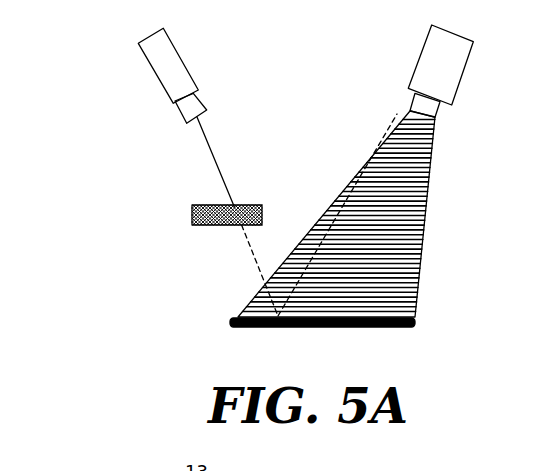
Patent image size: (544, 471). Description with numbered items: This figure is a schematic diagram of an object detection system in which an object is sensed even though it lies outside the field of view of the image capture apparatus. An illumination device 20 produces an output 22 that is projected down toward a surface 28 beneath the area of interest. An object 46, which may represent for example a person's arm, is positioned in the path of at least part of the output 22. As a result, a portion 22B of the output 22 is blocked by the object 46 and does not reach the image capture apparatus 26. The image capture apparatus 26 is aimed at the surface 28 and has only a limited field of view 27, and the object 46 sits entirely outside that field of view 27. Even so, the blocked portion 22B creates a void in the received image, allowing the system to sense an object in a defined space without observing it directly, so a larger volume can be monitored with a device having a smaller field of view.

The illumination device 20 is at (167, 73).
The output 22 is at (200, 132).
The object 46 is at (200, 207).
The portion of the output 22B is at (247, 240).
The image capture apparatus 26 is at (427, 70).
The field of view 27 is at (413, 187).
The surface 28 is at (373, 325).